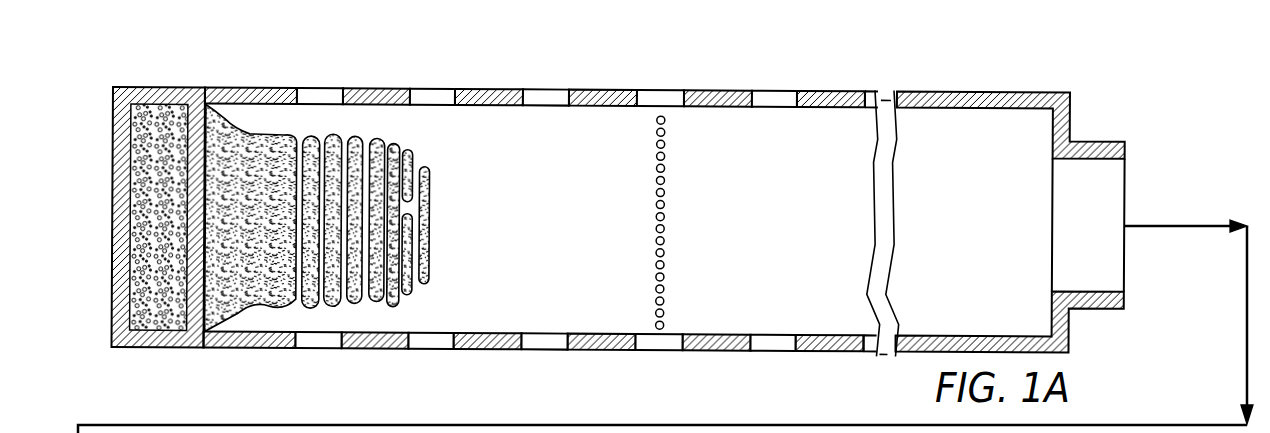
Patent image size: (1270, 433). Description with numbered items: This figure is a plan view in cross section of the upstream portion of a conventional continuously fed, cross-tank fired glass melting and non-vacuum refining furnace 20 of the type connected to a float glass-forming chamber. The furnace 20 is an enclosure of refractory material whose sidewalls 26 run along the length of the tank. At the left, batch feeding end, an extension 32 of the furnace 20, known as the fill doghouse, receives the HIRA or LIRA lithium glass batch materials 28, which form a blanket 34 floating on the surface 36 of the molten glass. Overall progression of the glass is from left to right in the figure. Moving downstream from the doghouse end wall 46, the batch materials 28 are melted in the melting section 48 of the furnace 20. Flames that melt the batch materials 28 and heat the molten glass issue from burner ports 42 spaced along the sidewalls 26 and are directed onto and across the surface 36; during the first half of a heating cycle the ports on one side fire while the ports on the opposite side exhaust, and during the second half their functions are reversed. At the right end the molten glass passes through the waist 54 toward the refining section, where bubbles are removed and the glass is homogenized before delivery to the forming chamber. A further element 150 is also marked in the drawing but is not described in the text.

The glass melting and non-vacuum refining furnace 20 is at (829, 69).
The sidewalls 26 is at (603, 97).
The glass batch materials 28 is at (378, 141).
The extension 32 is at (158, 86).
The blanket 34 is at (432, 222).
The surface 36 is at (536, 240).
The burner ports 42 is at (320, 97).
The doghouse end wall 46 is at (112, 228).
The melting section 48 is at (471, 70).
The waist 54 is at (1098, 136).
The droplets 150 is at (666, 189).